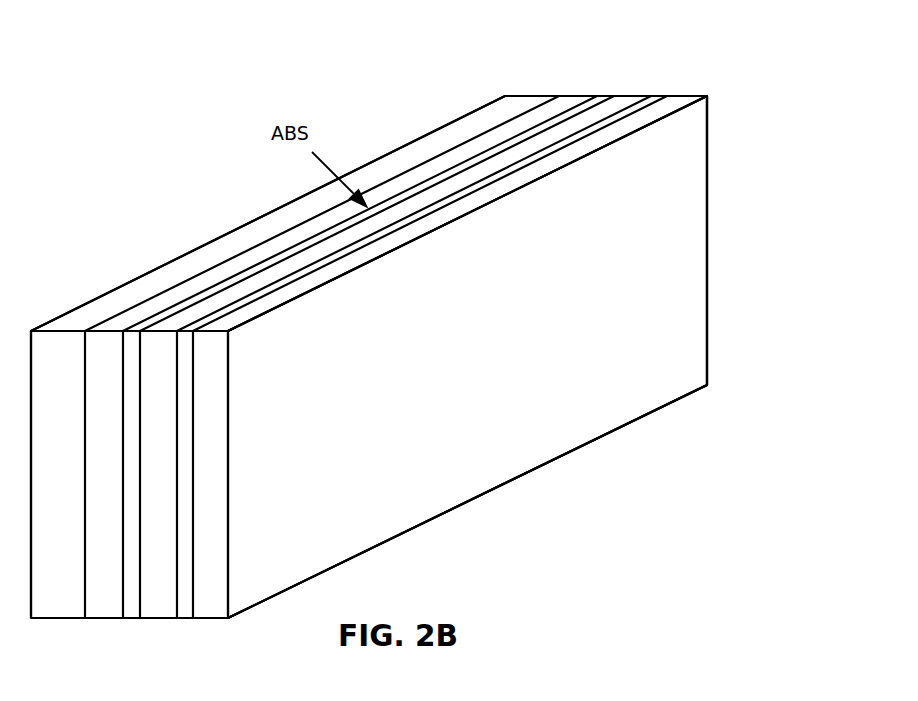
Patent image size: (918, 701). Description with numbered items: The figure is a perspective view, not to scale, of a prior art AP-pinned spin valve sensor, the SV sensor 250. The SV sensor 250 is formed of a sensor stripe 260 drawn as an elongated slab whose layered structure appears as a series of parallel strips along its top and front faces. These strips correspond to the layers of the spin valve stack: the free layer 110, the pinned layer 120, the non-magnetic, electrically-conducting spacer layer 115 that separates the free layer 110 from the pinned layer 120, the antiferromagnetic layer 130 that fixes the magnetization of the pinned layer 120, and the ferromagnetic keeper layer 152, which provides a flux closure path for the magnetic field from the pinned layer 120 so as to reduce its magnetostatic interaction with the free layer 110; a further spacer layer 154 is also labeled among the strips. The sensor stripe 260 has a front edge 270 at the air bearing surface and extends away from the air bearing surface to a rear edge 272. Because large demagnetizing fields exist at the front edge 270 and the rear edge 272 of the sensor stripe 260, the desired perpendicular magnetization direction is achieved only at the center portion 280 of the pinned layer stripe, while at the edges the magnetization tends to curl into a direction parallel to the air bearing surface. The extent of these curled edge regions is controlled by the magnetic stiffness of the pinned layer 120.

The antiferromagnetic layer 130 is at (523, 102).
The pinned layer 120 is at (572, 97).
The spacer layer 115 is at (598, 98).
The free layer 110 is at (623, 98).
The overcoat layer 154 is at (654, 100).
The keeper layer 152 is at (677, 107).
The sensor stripe 260 is at (707, 187).
The front edge 270 is at (390, 253).
The rear edge 272 is at (495, 487).
The center portion 280 is at (500, 345).
The SV sensor 250 is at (572, 537).